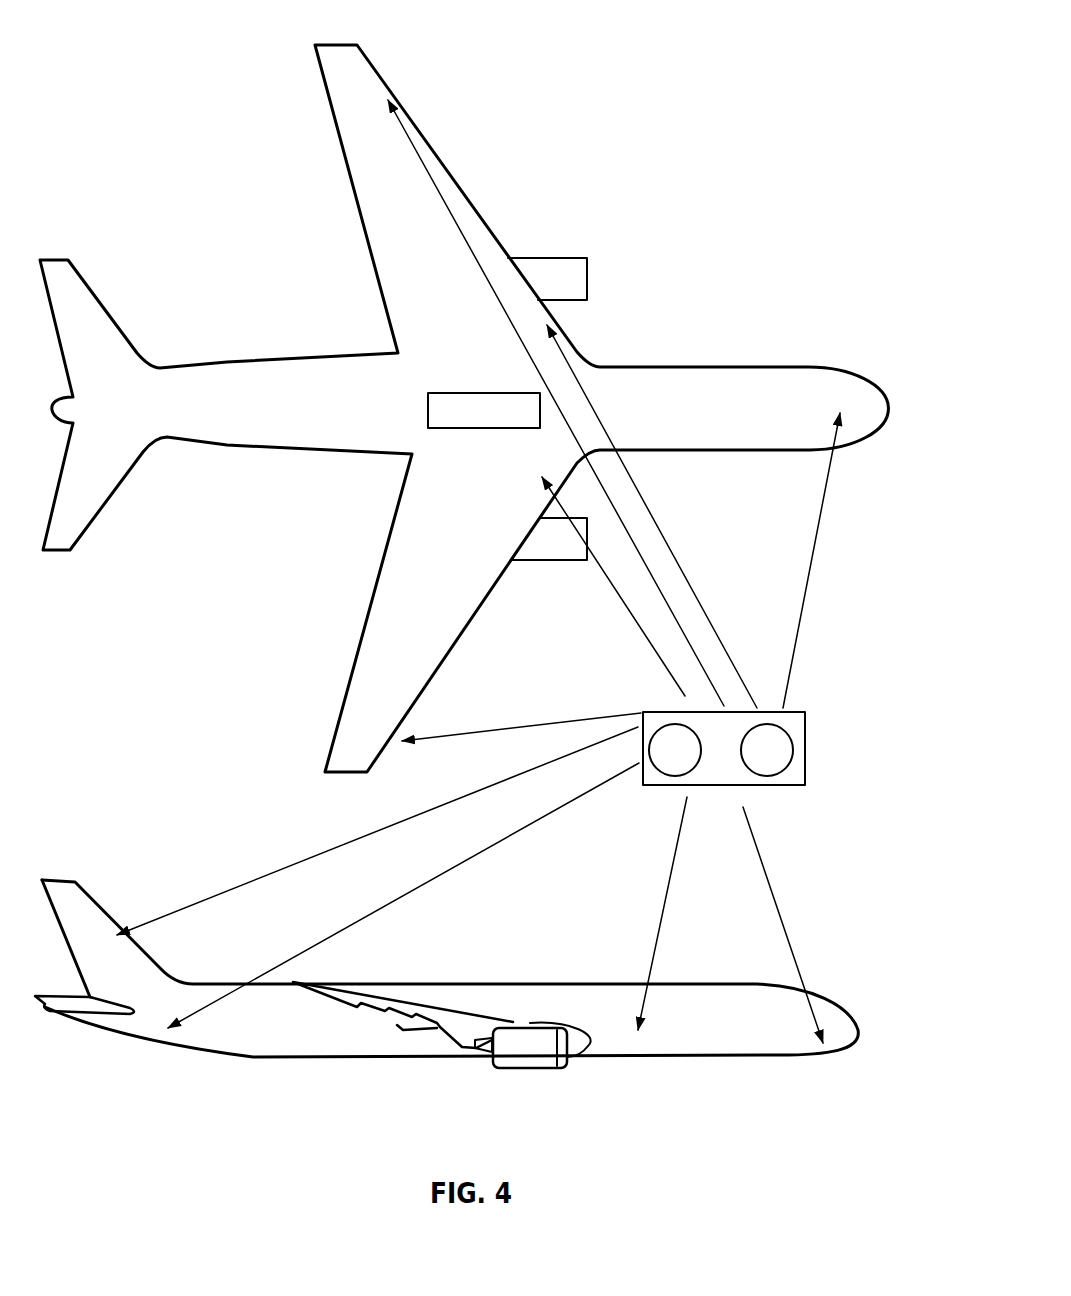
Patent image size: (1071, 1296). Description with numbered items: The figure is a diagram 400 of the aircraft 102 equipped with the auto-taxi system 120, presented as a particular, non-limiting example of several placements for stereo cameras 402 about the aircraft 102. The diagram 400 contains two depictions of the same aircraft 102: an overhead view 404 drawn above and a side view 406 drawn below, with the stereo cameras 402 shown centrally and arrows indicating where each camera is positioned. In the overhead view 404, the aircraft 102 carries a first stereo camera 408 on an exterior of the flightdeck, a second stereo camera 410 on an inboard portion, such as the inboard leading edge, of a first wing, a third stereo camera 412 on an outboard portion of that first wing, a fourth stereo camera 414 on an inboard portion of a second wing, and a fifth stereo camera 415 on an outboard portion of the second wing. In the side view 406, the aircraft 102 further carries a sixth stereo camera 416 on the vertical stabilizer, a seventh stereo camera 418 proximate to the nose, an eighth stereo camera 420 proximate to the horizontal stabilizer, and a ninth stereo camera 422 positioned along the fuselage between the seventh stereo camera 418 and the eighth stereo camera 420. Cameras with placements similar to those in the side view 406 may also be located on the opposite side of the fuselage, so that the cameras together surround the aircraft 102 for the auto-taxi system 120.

The diagram 400 is at (130, 61).
The aircraft 102 is at (707, 366).
The auto-taxi system 120 is at (472, 393).
The stereo cameras 402 is at (806, 730).
The overhead view 404 is at (823, 299).
The side view 406 is at (874, 942).
The first stereo camera 408 is at (810, 578).
The second stereo camera 410 is at (625, 612).
The third stereo camera 412 is at (434, 738).
The fourth stereo camera 414 is at (682, 562).
The fifth stereo camera 415 is at (476, 278).
The sixth stereo camera 416 is at (241, 884).
The seventh stereo camera 418 is at (785, 927).
The eighth stereo camera 420 is at (326, 937).
The ninth stereo camera 422 is at (657, 948).